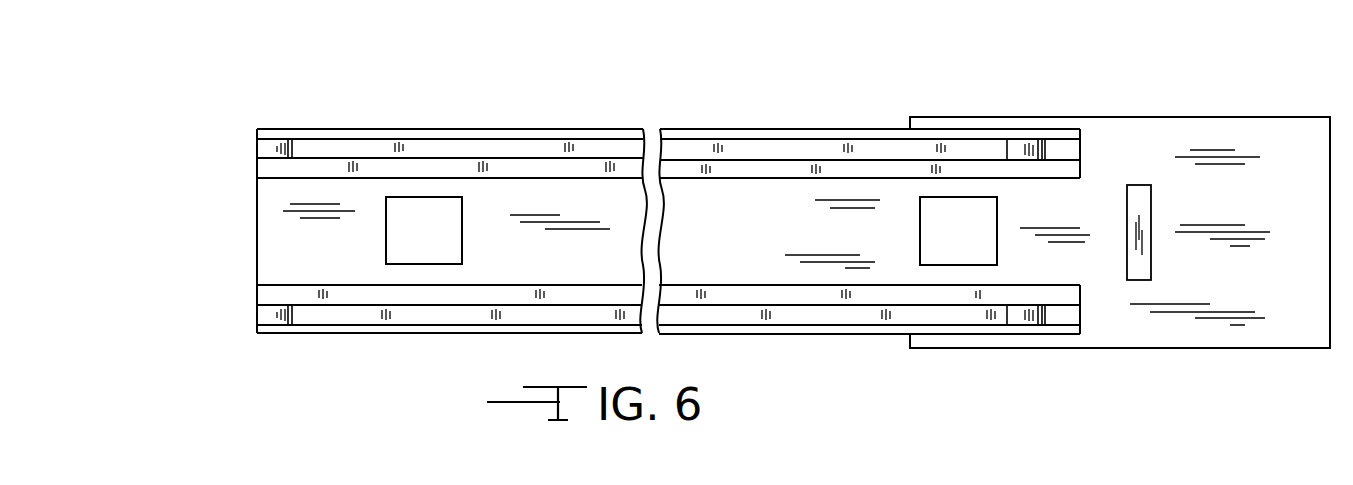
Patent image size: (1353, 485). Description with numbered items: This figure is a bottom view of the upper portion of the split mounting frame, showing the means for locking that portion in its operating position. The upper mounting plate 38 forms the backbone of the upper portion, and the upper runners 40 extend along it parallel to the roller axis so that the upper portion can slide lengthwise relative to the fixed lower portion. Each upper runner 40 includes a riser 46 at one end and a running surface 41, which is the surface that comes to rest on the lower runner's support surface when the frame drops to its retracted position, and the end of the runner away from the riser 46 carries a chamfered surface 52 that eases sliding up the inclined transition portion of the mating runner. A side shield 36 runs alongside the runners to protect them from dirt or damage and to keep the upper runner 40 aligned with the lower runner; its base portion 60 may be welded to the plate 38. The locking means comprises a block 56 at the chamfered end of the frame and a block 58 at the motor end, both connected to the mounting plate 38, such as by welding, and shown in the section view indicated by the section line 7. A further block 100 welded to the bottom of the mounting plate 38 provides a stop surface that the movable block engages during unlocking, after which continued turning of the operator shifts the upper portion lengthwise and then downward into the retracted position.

The section line 7- 7 is at (223, 98).
The side shield 36 is at (752, 139).
The upper mounting plate 38 is at (1277, 333).
The upper runner 40 is at (542, 149).
The running surface 41 is at (428, 149).
The riser 46 is at (1025, 148).
The chamfered surface 52 is at (278, 148).
The block 56 is at (446, 256).
The block 58 is at (982, 256).
The base portion 60 is at (735, 173).
The block 100 is at (1138, 196).